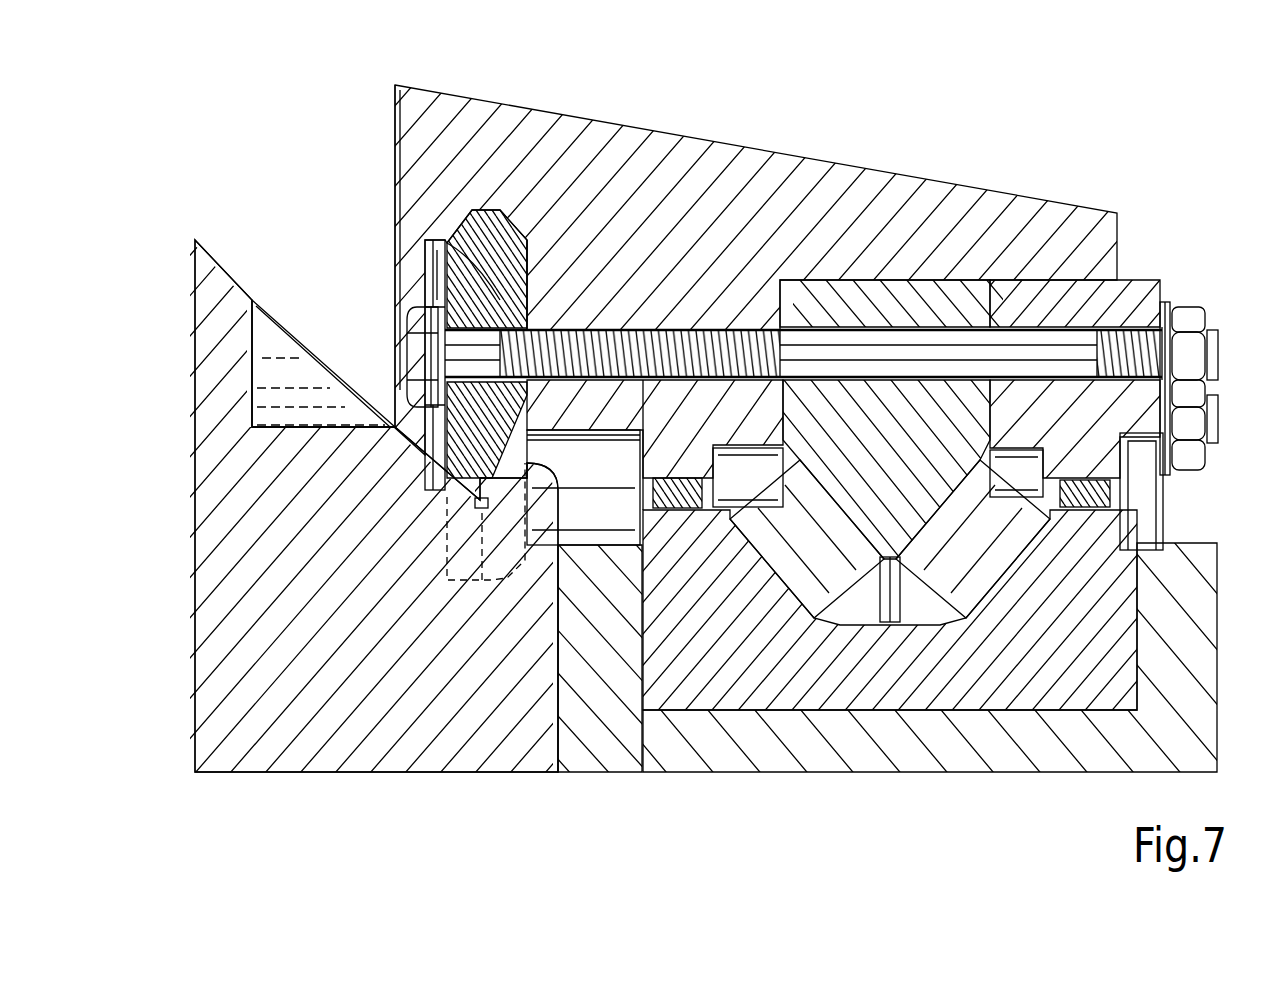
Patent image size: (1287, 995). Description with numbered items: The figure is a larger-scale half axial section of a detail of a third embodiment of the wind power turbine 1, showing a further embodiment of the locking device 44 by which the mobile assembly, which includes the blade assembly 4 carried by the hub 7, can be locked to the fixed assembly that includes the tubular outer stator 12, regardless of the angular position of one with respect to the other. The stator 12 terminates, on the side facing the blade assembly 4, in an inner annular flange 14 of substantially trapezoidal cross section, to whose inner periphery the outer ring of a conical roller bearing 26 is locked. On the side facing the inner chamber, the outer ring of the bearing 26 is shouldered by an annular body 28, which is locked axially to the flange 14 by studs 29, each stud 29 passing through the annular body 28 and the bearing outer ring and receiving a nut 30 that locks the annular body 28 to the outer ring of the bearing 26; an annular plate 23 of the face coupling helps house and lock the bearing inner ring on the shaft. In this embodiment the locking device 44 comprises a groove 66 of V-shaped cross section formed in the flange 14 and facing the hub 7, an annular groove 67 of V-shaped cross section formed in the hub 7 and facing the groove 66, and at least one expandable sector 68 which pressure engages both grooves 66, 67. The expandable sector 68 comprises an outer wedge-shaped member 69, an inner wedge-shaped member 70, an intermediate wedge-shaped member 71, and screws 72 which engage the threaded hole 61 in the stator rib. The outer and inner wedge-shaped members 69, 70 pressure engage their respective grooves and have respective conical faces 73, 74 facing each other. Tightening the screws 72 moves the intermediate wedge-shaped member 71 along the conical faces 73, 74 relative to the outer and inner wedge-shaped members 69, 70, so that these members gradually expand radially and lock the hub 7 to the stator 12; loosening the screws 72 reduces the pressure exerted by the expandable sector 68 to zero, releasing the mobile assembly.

The wind power turbine 1 is at (275, 145).
The blade assembly 4 is at (218, 236).
The hub 7 is at (210, 338).
The outer stator 12 is at (766, 146).
The inner annular flange 14 is at (388, 158).
The annular plate 23 is at (598, 740).
The conical roller bearing 26 is at (858, 276).
The annular body 28 is at (1128, 293).
The stud 29 is at (1030, 345).
The nut 30 is at (1187, 330).
The locking device 44 is at (304, 296).
The threaded through hole 61 is at (698, 330).
The groove 66 is at (418, 278).
The annular groove 67 is at (470, 465).
The expandable sector 68 is at (413, 296).
The outer wedge-shaped member 69 is at (505, 280).
The inner wedge-shaped member 70 is at (478, 508).
The intermediate wedge-shaped member 71 is at (555, 285).
The screw 72 is at (418, 355).
The conical face 73 is at (490, 310).
The conical face 74 is at (567, 437).